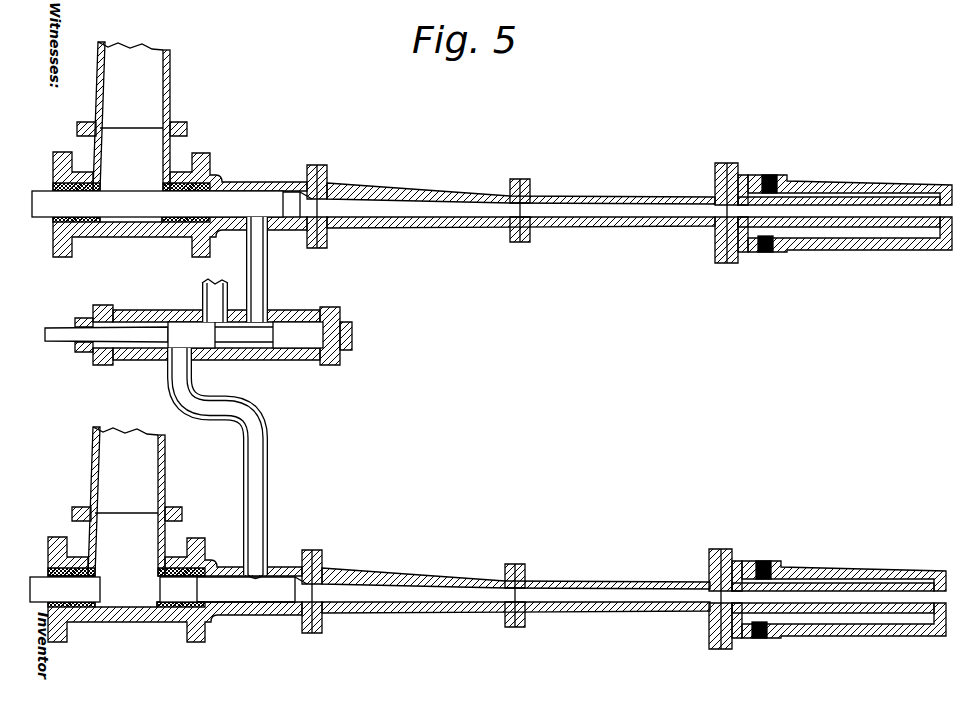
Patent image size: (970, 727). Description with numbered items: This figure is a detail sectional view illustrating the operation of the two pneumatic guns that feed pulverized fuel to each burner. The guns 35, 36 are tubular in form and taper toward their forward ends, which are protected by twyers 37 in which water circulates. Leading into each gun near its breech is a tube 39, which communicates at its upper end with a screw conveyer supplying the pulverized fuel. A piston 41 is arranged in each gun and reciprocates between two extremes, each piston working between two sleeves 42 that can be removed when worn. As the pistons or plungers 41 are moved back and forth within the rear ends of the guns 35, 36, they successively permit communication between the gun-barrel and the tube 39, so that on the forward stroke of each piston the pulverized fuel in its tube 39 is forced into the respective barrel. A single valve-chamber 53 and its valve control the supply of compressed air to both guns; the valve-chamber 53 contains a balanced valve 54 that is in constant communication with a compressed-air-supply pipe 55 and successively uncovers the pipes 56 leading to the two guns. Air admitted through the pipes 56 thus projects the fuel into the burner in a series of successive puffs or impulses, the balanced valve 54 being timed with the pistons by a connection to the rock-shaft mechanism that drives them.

The pneumatic gun 35 is at (516, 580).
The pneumatic gun 36 is at (521, 191).
The twyer 37 is at (830, 401).
The tube 39 is at (150, 498).
The piston 41 is at (148, 203).
The sleeve 42 is at (170, 222).
The valve-chamber 53 is at (259, 361).
The balanced valve 54 is at (184, 335).
The compressed-air-supply pipe 55 is at (212, 292).
The pipe 56 is at (262, 268).